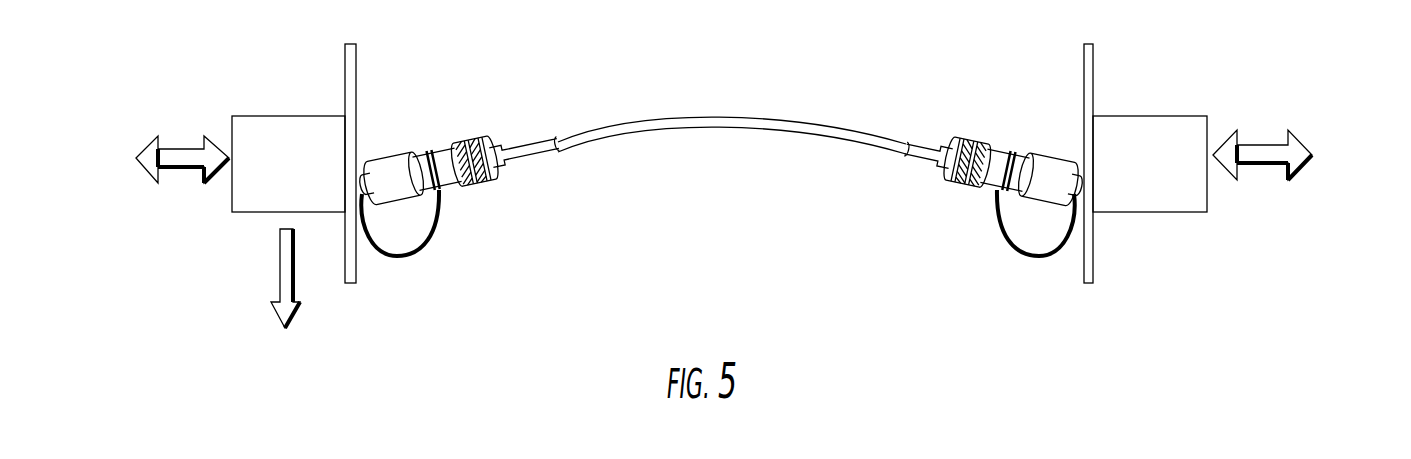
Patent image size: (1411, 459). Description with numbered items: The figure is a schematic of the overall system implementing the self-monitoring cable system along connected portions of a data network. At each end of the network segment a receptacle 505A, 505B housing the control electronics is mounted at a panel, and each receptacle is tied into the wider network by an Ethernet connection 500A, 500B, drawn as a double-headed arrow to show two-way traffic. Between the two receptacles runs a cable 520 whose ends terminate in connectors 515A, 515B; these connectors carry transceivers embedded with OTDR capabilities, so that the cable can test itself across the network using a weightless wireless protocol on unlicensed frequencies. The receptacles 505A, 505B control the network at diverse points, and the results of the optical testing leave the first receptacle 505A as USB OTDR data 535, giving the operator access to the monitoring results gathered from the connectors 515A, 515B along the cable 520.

The Ethernet connection 500A is at (83, 147).
The receptacle 505A is at (292, 116).
The connector 515A is at (447, 183).
The cable 520 is at (707, 115).
The connector 515B is at (990, 186).
The receptacle 505B is at (1168, 116).
The Ethernet connection 500B is at (1345, 147).
The USB OTDR data output 535 is at (292, 371).